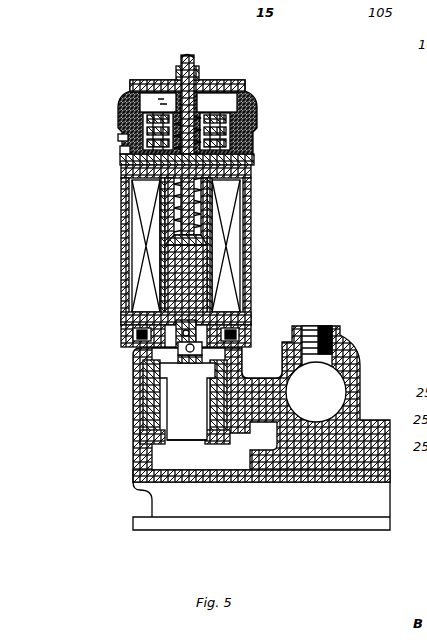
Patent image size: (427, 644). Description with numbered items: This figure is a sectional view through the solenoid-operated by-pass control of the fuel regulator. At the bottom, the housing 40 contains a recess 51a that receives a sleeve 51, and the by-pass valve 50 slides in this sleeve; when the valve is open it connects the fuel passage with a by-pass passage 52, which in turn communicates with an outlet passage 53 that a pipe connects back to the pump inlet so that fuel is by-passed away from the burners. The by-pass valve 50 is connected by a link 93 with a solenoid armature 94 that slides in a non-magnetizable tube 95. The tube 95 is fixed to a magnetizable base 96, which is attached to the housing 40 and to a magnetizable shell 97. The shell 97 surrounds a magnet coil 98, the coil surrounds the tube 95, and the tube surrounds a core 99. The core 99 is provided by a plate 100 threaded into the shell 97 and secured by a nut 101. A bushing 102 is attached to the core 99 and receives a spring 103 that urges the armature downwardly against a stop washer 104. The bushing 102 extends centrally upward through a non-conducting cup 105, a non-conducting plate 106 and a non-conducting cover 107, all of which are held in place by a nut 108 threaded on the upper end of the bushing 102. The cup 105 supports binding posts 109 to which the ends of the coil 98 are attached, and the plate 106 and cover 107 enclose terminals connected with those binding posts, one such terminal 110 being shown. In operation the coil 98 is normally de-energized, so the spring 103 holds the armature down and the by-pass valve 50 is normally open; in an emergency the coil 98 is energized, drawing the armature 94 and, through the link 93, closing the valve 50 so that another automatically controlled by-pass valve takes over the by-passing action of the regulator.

The housing 40 is at (282, 360).
The by-pass valve 50 is at (182, 442).
The sleeve 51 is at (142, 362).
The recess 51a is at (140, 456).
The by-pass passage 52 is at (270, 467).
The outlet passage 53 is at (340, 396).
The link 93 is at (130, 337).
The solenoid armature 94 is at (207, 258).
The non-magnetizable tube 95 is at (212, 272).
The magnetizable base 96 is at (238, 306).
The magnetizable shell 97 is at (243, 207).
The magnet coil 98 is at (203, 238).
The core 99 is at (252, 186).
The plate 100 is at (254, 170).
The nut 101 is at (253, 150).
The bushing 102 is at (188, 56).
The spring 103 is at (228, 82).
The stop washer 104 is at (244, 332).
The non-conducting cup 105 is at (124, 150).
The non-conducting plate 106 is at (162, 92).
The non-conducting cover 107 is at (127, 98).
The nut 108 is at (198, 70).
The binding posts 109 is at (120, 138).
The terminal 110 is at (213, 90).